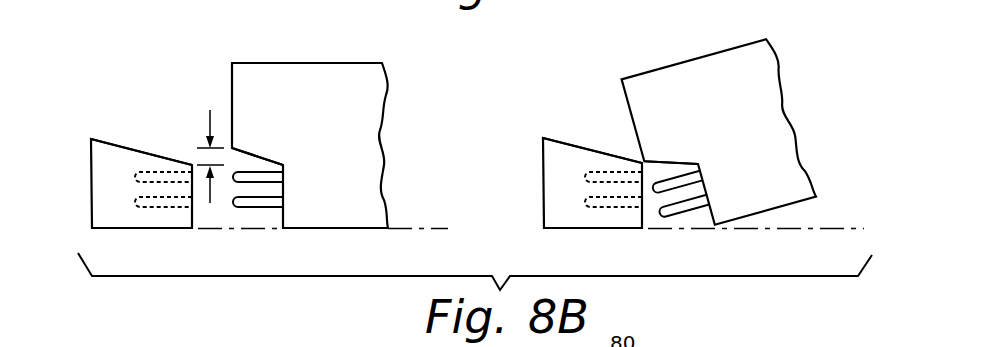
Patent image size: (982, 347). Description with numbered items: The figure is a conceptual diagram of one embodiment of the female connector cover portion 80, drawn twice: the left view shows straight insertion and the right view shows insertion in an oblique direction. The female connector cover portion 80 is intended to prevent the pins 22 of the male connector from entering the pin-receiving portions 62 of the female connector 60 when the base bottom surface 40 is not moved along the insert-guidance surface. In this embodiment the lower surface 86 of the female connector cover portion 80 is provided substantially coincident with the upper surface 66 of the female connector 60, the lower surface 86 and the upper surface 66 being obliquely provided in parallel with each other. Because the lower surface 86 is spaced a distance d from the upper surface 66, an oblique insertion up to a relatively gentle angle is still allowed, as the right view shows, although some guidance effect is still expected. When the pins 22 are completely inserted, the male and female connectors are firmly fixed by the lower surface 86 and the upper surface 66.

The pins 22 is at (252, 208).
The base bottom surface 40 is at (337, 230).
The female connector 60 is at (76, 146).
The pin-receiving portions 62 is at (150, 206).
The upper surface 66 is at (133, 140).
The female connector cover portion 80 is at (210, 72).
The lower surface 86 is at (258, 156).
The distance d is at (202, 156).